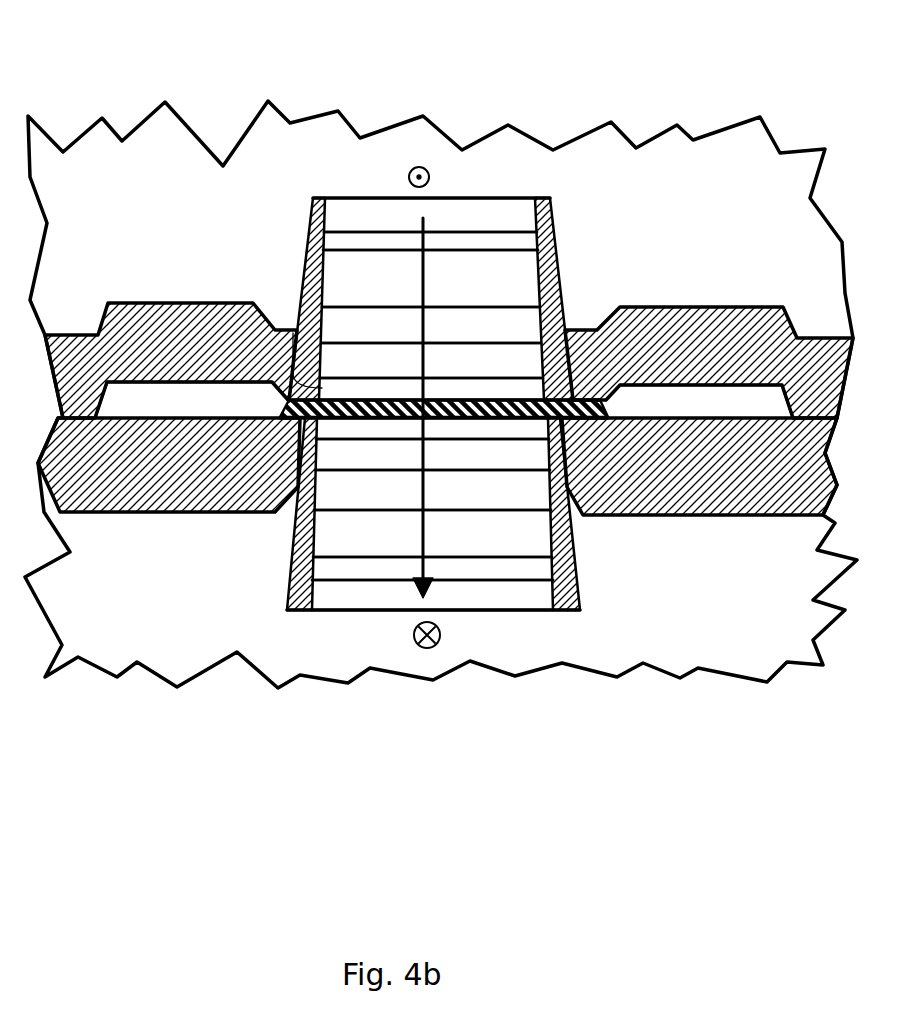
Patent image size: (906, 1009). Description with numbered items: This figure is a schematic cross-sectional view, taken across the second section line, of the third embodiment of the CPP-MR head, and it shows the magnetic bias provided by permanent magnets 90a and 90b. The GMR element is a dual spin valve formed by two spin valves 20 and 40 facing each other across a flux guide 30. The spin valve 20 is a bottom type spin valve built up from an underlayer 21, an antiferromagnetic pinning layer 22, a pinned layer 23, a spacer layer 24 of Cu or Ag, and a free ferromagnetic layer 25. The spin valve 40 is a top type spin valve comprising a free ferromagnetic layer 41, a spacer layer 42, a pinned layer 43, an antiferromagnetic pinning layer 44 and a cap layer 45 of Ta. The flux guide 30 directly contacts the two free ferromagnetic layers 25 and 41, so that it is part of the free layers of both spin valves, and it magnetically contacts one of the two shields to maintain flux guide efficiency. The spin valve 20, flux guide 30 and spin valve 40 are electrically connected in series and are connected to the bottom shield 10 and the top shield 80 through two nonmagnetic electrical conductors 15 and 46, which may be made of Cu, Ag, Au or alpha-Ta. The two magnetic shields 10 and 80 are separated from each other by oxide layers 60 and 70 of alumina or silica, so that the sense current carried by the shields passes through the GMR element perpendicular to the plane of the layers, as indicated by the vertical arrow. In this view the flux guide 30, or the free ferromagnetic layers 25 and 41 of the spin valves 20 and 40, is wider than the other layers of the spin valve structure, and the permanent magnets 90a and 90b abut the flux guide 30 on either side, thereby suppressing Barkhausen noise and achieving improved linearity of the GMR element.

The bottom shield 10 is at (200, 632).
The nonmagnetic electrical conductor 15 is at (325, 598).
The spin valve 20 is at (293, 563).
The underlayer 21 is at (350, 568).
The antiferromagnetic pinning layer 22 is at (367, 540).
The pinned layer 23 is at (445, 500).
The spacer layer 24 is at (472, 455).
The free ferromagnetic layer 25 is at (500, 427).
The flux guide 30 is at (380, 398).
The spin valve 40 is at (292, 305).
The free ferromagnetic layer 41 is at (520, 393).
The spacer layer 42 is at (498, 365).
The pinned layer 43 is at (490, 327).
The antiferromagnetic pinning layer 44 is at (470, 275).
The cap layer 45 is at (365, 243).
The nonmagnetic electrical conductor 46 is at (342, 217).
The oxide layer 60 is at (108, 473).
The oxide layer 70 is at (170, 338).
The top shield 80 is at (252, 183).
The permanent magnet 90a is at (183, 403).
The permanent magnet 90b is at (702, 400).